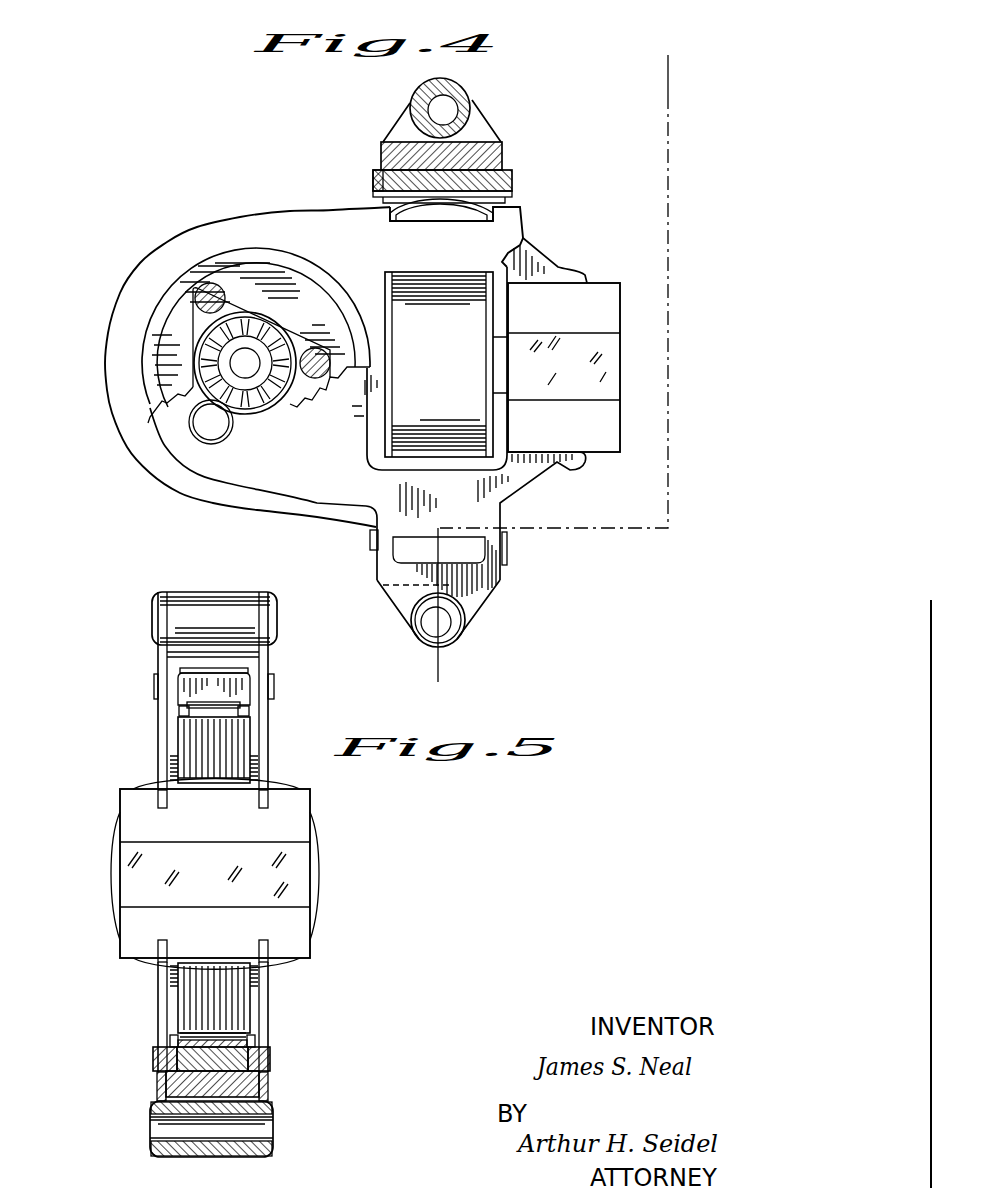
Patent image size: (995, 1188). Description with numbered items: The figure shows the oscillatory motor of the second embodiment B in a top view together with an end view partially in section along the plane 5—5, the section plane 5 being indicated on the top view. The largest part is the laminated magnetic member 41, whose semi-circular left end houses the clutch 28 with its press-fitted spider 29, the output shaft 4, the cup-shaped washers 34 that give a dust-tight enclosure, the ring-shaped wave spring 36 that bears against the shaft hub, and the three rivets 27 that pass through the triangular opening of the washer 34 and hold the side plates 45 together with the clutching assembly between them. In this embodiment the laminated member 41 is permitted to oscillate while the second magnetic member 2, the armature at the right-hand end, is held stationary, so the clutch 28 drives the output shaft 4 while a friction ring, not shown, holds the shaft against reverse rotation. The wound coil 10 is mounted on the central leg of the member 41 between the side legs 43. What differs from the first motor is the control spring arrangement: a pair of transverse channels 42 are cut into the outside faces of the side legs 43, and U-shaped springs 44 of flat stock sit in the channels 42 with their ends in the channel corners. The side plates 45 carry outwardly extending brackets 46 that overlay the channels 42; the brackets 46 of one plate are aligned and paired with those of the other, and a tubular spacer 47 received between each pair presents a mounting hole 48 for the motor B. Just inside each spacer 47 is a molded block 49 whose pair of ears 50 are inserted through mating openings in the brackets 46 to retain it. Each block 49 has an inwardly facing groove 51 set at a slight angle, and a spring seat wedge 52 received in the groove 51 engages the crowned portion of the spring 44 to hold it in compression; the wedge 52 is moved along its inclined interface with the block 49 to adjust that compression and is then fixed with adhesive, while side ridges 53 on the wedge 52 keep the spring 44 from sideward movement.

In FIG. 4, the second magnetic member 2 is at (606, 280).
In FIG. 5, the second magnetic member 2 is at (312, 953).
In FIG. 4, the output shaft 4 is at (192, 322).
In FIG. 4, the central leg 5 is at (712, 77).
In FIG. 4, the wound coil 10 is at (385, 300).
In FIG. 5, the wound coil 10 is at (118, 866).
In FIG. 4, the rivets 27 is at (214, 290).
In FIG. 4, the clutch 28 is at (160, 278).
In FIG. 4, the spider 29 is at (192, 267).
In FIG. 4, the washers 34 is at (140, 338).
In FIG. 4, the wave spring 36 is at (273, 323).
In FIG. 4, the laminated magnetic member 41 is at (290, 205).
In FIG. 5, the laminated magnetic member 41 is at (176, 742).
In FIG. 4, the channels 42 is at (437, 216).
In FIG. 4, the side legs 43 is at (483, 238).
In FIG. 4, the U-shaped springs 44 is at (403, 218).
In FIG. 5, the U-shaped springs 44 is at (240, 704).
In FIG. 4, the side plates 45 is at (323, 505).
In FIG. 5, the side plates 45 is at (270, 745).
In FIG. 4, the brackets 46 is at (486, 124).
In FIG. 5, the brackets 46 is at (163, 592).
In FIG. 4, the tubular spacer 47 is at (408, 118).
In FIG. 5, the tubular spacer 47 is at (206, 592).
In FIG. 4, the mounting hole 48 is at (452, 100).
In FIG. 5, the mounting hole 48 is at (173, 1140).
In FIG. 4, the molded block 49 is at (380, 156).
In FIG. 5, the molded block 49 is at (250, 668).
In FIG. 4, the ears 50 is at (394, 558).
In FIG. 5, the ears 50 is at (154, 682).
In FIG. 4, the groove 51 is at (375, 186).
In FIG. 5, the groove 51 is at (210, 677).
In FIG. 4, the spring seat wedges 52 is at (512, 180).
In FIG. 5, the spring seat wedges 52 is at (180, 692).
In FIG. 4, the side ridges 53 is at (512, 197).
In FIG. 5, the side ridges 53 is at (185, 708).
In FIG. 4, the second embodiment B is at (118, 282).
In FIG. 5, the second embodiment B is at (104, 718).